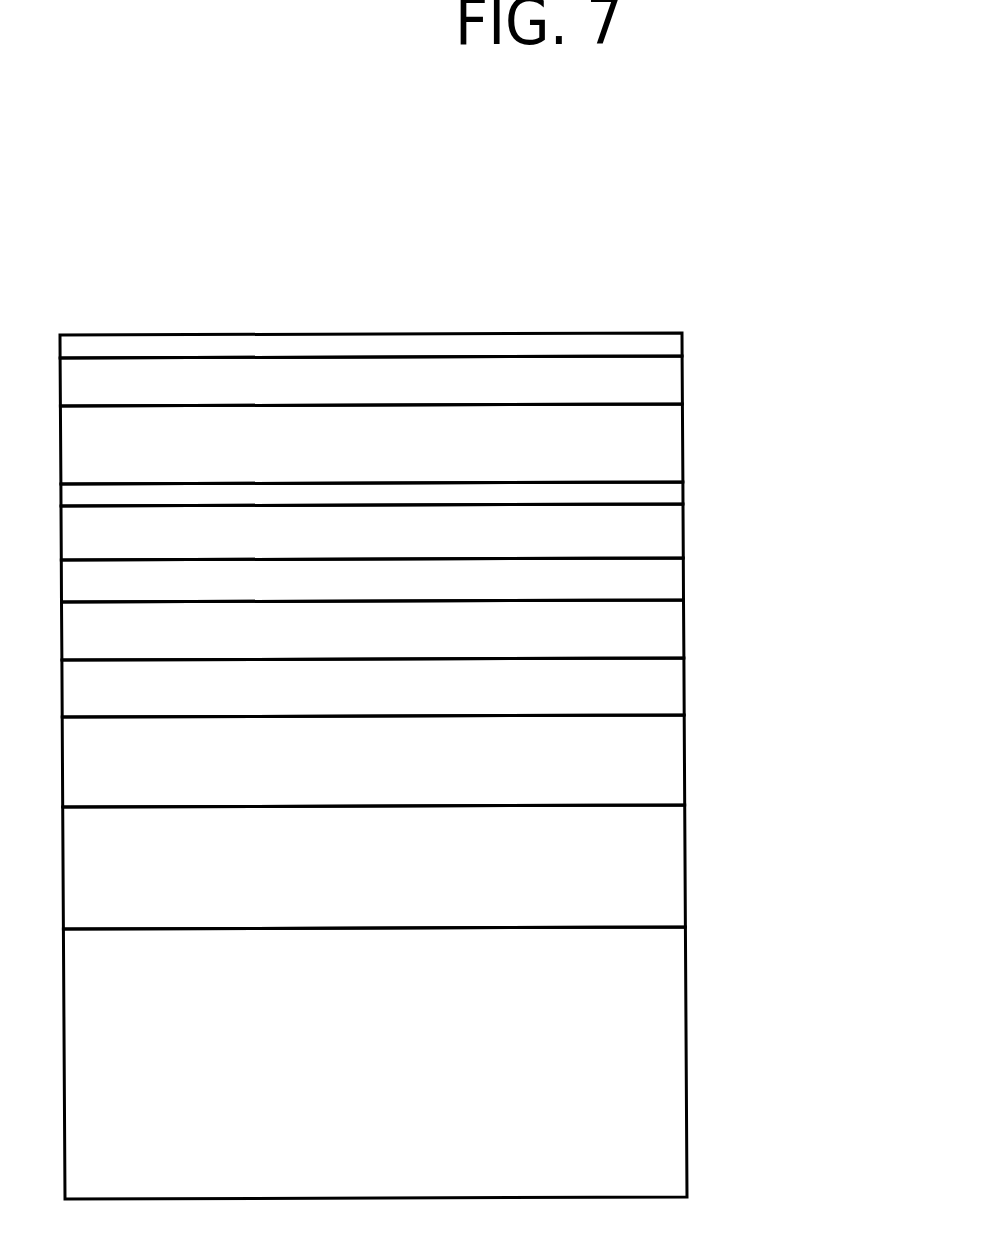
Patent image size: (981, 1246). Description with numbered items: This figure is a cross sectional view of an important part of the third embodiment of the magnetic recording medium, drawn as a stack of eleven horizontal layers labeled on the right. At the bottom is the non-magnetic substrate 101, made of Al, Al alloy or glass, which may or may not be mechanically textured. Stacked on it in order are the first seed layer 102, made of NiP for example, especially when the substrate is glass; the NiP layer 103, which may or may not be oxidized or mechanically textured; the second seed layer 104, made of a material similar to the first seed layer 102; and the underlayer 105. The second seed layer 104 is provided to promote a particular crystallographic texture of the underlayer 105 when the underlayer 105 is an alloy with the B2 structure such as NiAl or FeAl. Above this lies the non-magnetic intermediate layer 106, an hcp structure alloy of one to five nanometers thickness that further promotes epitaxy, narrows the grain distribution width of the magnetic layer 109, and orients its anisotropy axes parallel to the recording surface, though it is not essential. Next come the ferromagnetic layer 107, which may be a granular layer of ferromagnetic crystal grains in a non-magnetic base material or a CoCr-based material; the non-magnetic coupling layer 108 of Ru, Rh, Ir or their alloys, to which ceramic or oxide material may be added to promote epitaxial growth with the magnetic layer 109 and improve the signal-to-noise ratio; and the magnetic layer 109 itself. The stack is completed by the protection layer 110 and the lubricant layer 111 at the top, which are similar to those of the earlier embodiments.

The non-magnetic substrate 101 is at (706, 1050).
The first seed layer 102 is at (705, 866).
The NiP layer 103 is at (704, 757).
The second seed layer 104 is at (704, 685).
The underlayer 105 is at (704, 628).
The non-magnetic intermediate layer 106 is at (703, 582).
The ferromagnetic layer 107 is at (703, 534).
The non-magnetic coupling layer 108 is at (703, 488).
The magnetic layer 109 is at (703, 442).
The protection layer 110 is at (702, 378).
The lubricant layer 111 is at (702, 343).